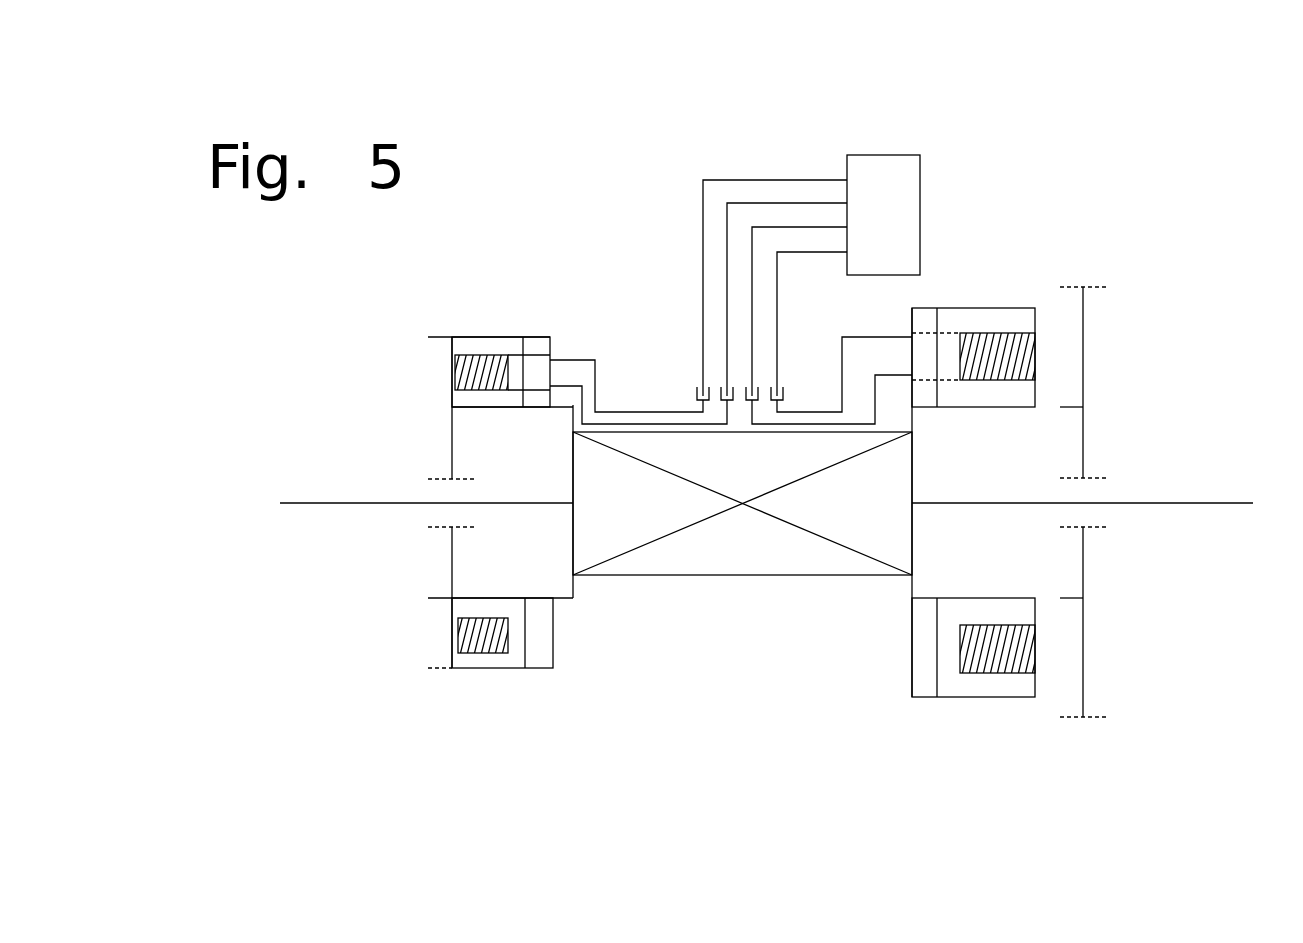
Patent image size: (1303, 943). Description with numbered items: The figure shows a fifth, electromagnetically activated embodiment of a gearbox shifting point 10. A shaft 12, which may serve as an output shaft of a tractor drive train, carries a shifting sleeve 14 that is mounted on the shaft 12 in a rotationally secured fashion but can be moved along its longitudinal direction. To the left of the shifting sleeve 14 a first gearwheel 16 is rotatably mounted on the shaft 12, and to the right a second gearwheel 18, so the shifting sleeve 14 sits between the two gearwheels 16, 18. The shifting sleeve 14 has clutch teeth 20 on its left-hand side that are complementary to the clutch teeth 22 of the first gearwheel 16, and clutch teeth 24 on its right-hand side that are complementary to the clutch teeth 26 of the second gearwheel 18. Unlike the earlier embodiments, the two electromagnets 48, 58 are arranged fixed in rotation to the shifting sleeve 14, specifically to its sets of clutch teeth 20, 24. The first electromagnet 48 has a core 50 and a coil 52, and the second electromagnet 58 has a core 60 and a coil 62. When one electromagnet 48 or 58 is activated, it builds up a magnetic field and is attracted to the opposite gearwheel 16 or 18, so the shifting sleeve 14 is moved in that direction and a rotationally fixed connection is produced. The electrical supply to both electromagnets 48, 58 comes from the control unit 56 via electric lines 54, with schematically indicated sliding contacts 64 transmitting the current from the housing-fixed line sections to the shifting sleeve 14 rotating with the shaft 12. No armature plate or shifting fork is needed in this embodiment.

The gearbox shifting point 10 is at (538, 828).
The shaft 12 is at (1202, 500).
The shifting sleeve 14 is at (800, 627).
The first gearwheel 16 is at (452, 366).
The second gearwheel 18 is at (1085, 363).
The clutch teeth 20 is at (573, 585).
The clutch teeth 22 is at (467, 597).
The clutch teeth 24 is at (940, 407).
The clutch teeth 26 is at (1070, 400).
The electromagnet 48 is at (512, 295).
The core 50 is at (515, 668).
The coil 52 is at (468, 655).
The electric lines 54 is at (741, 122).
The control unit 56 is at (918, 230).
The second electromagnet 58 is at (958, 750).
The core 60 is at (945, 657).
The coil 62 is at (997, 667).
The sliding contacts 64 is at (717, 365).